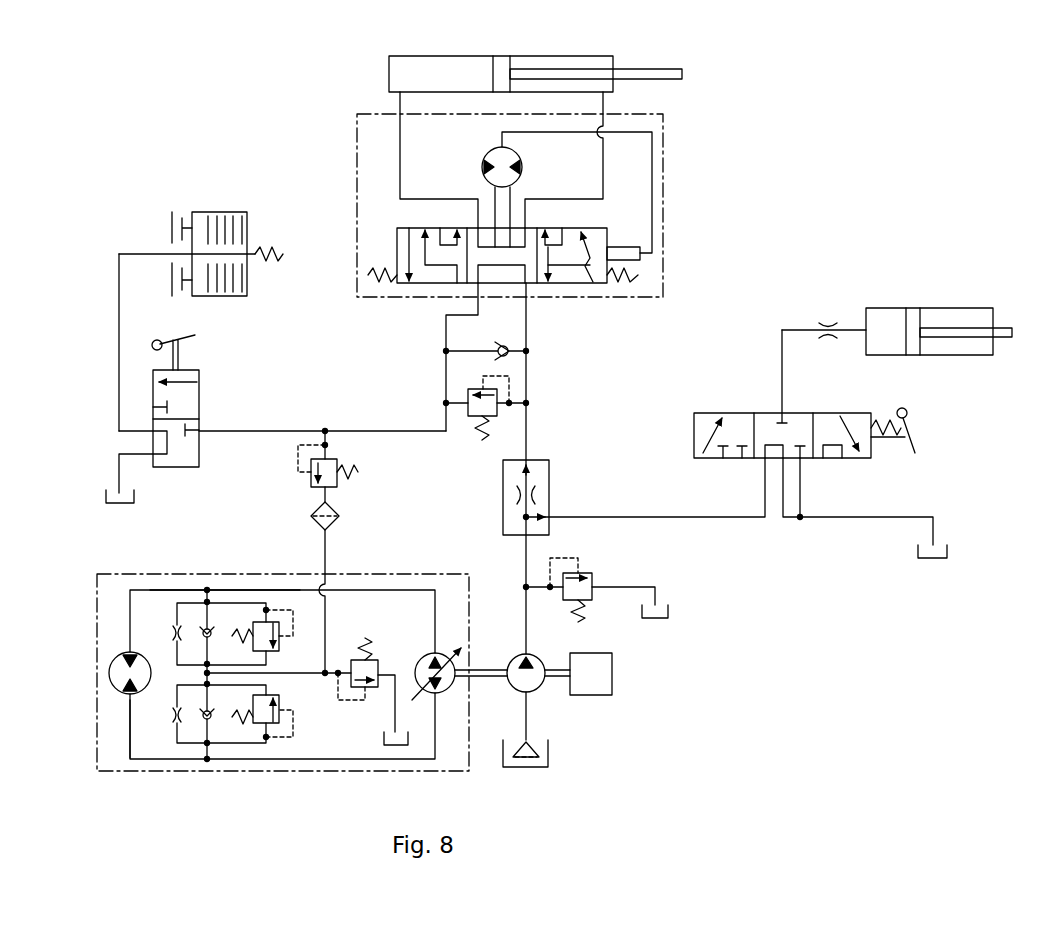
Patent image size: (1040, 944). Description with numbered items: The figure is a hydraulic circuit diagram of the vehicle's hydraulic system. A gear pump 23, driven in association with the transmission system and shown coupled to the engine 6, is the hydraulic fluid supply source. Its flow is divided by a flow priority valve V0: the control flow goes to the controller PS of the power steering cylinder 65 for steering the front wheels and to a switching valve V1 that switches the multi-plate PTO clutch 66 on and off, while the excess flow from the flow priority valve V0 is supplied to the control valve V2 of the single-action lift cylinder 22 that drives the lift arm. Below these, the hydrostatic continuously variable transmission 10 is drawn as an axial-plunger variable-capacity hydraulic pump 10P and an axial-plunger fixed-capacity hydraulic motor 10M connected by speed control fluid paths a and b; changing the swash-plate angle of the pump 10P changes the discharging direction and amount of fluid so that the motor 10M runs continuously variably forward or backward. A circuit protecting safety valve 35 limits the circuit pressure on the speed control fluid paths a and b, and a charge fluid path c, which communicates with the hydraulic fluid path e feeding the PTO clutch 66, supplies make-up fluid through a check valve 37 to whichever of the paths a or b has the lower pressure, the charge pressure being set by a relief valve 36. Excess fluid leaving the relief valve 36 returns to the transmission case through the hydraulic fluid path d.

The power steering cylinder 65 is at (389, 74).
The multi-plate PTO clutch 66 is at (226, 212).
The lift cylinder 22 is at (892, 308).
The hydrostatic continuously variable transmission 10 is at (120, 566).
The hydraulic motor 10M is at (109, 673).
The hydraulic pump 10P is at (447, 690).
The check valve 37 is at (203, 628).
The circuit protecting safety valve 35 is at (276, 694).
The relief valve 36 is at (377, 660).
The gear pump 23 is at (511, 658).
The engine 6 is at (591, 674).
The controller PS is at (663, 204).
The flow priority valve V0 is at (549, 473).
The switching valve V1 is at (199, 392).
The control valve V2 is at (735, 412).
The speed control fluid path a is at (285, 590).
The speed control fluid path b is at (130, 725).
The charge fluid path c is at (330, 550).
The hydraulic fluid path d is at (393, 708).
The hydraulic fluid path e is at (392, 431).